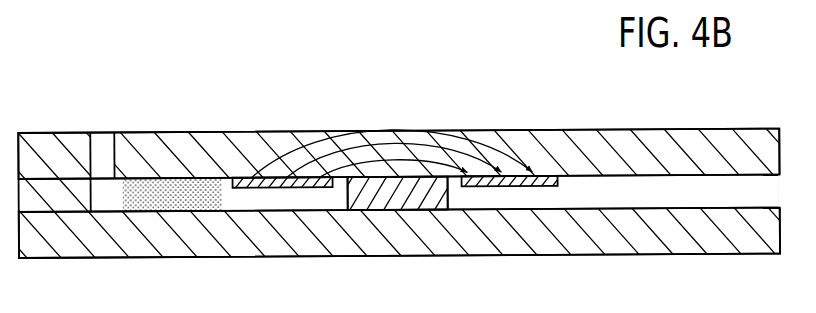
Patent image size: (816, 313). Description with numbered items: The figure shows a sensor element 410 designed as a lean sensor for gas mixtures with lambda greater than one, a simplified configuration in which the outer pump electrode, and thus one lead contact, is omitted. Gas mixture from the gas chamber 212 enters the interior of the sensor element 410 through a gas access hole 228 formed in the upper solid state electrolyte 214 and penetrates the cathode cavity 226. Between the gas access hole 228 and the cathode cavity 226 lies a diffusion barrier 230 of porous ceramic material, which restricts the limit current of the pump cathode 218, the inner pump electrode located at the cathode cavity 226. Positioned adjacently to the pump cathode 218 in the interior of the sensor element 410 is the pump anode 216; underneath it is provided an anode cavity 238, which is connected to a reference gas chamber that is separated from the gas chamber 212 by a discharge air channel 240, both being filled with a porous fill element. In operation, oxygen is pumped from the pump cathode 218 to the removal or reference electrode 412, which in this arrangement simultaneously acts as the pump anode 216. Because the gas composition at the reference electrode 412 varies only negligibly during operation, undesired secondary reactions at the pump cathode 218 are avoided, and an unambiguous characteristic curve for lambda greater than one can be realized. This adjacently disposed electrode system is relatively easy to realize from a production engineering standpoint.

The gas chamber 212 is at (128, 58).
The upper solid state electrolyte 214 is at (205, 143).
The pump anode 216 is at (529, 188).
The pump cathode 218 is at (306, 190).
The cathode cavity 226 is at (268, 209).
The gas access hole 228 is at (102, 130).
The diffusion barrier 230 is at (168, 213).
The anode cavity 238 is at (485, 206).
The discharge air channel 240 is at (696, 198).
The sensor element 410 is at (413, 95).
The reference electrode 412 is at (529, 188).